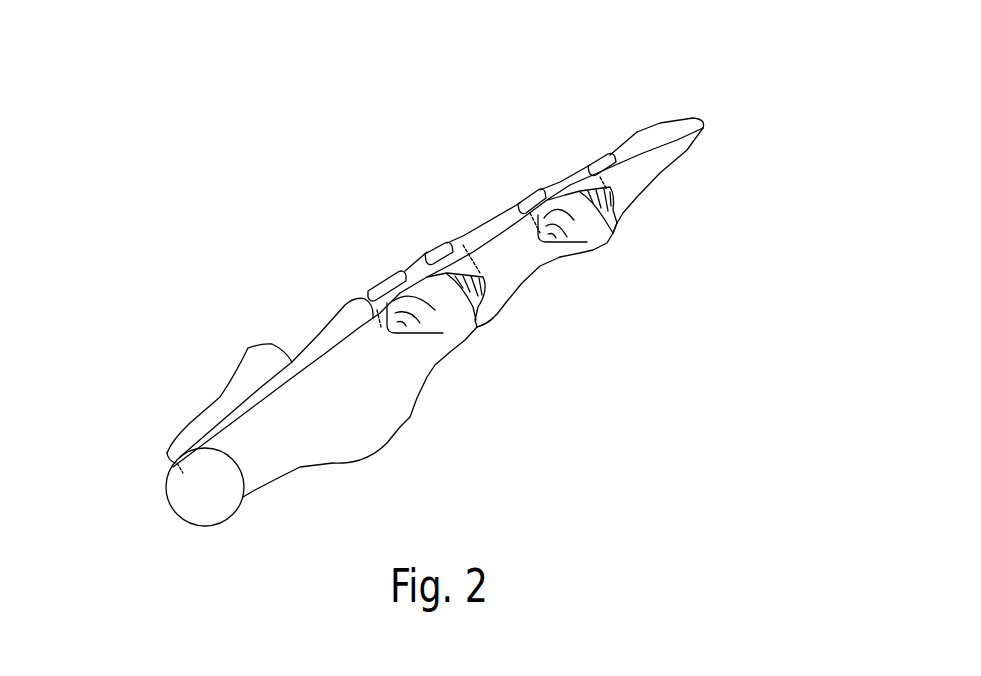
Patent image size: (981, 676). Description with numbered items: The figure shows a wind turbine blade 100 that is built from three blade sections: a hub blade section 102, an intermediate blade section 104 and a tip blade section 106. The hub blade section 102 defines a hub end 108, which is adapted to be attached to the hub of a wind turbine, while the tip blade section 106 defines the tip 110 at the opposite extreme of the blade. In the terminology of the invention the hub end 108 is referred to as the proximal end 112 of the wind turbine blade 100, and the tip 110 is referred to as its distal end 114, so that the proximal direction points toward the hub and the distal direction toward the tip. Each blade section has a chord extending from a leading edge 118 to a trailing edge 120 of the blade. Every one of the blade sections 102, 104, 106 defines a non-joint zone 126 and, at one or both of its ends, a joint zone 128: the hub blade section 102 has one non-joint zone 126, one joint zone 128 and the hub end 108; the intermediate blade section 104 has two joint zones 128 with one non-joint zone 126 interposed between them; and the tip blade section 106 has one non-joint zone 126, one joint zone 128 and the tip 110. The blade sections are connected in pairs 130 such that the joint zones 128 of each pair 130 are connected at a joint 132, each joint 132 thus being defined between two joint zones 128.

The wind turbine blade 100 is at (232, 235).
The hub blade section 102 is at (400, 490).
The intermediate blade section 104 is at (597, 318).
The tip blade section 106 is at (712, 168).
The hub end 108 is at (202, 508).
The tip 110 is at (702, 123).
The proximal end 112 is at (153, 472).
The distal end 114 is at (697, 107).
The leading edge 118 is at (292, 362).
The trailing edge 120 is at (410, 417).
The non-joint zone 126 is at (248, 348).
The joint zone 128 is at (372, 292).
The pair 130 is at (498, 330).
The joint 132 is at (493, 317).